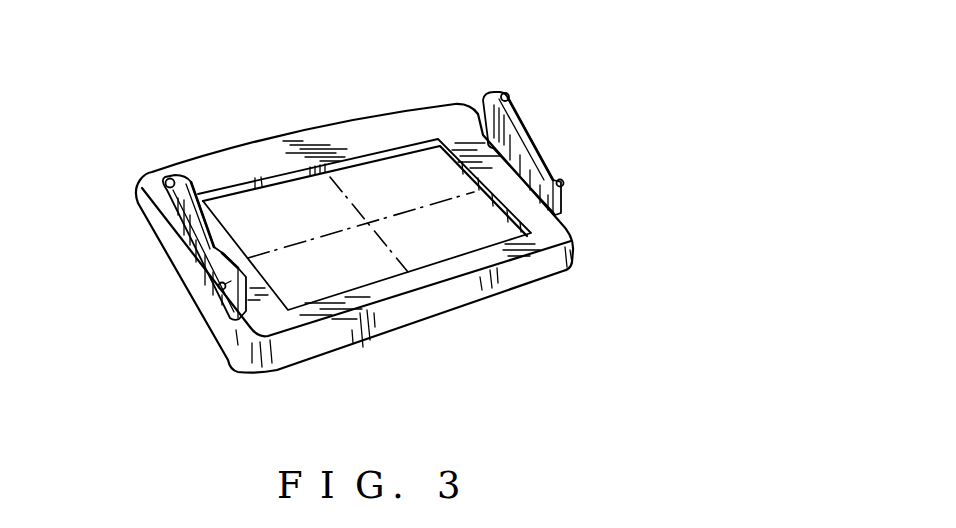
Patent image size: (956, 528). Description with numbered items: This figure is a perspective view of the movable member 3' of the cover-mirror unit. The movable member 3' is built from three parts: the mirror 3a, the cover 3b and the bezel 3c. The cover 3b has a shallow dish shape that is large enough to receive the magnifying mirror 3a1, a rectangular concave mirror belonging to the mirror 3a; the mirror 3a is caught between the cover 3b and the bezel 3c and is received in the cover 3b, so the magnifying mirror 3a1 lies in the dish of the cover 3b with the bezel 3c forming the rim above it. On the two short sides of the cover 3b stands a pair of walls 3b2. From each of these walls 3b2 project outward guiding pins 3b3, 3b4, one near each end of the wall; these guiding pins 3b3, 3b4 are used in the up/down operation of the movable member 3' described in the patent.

The movable member 3' is at (361, 241).
The mirror 3a is at (383, 160).
The magnifying mirror 3a1 is at (442, 140).
The cover 3b is at (343, 353).
The walls 3b2 is at (524, 139).
The guiding pin 3b3 is at (510, 96).
The guiding pin 3b4 is at (565, 183).
The bezel 3c is at (338, 136).